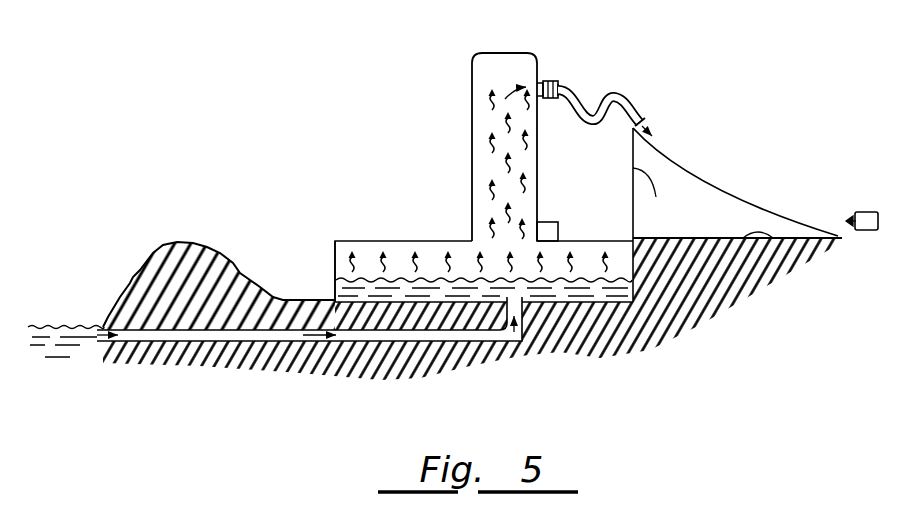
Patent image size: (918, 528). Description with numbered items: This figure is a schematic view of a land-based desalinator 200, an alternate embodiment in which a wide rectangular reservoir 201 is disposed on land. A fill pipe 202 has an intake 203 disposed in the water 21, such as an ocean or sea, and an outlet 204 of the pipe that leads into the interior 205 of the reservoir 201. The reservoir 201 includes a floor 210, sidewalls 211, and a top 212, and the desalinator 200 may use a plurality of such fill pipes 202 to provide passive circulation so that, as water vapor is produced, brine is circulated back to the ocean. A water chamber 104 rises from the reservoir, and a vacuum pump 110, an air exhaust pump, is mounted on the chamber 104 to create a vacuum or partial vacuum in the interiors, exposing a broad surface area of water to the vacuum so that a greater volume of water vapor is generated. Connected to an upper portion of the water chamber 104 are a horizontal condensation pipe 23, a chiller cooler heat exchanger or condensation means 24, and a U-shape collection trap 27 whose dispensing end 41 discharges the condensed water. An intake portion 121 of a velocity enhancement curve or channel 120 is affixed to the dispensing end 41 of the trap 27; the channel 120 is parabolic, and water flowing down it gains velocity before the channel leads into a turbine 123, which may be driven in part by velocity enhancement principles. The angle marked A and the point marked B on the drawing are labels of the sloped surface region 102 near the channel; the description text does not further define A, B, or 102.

The water 21 is at (80, 325).
The horizontal condensation pipe 23 is at (540, 80).
The condensation means 24 is at (560, 80).
The U-shape collection trap 27 is at (598, 125).
The dispensing end 41 is at (623, 97).
The sloped surface 102 is at (713, 172).
The water chamber 104 is at (482, 55).
The vacuum pump 110 is at (548, 222).
The velocity enhancement channel 120 is at (833, 236).
The intake portion 121 is at (650, 128).
The turbine 123 is at (868, 212).
The land-based desalinator 200 is at (491, 192).
The reservoir 201 is at (433, 241).
The fill pipe 202 is at (177, 355).
The intake 203 is at (103, 337).
The outlet 204 is at (522, 296).
The interior 205 is at (367, 252).
The floor 210 is at (523, 297).
The sidewalls 211 is at (335, 262).
The top 212 is at (621, 239).
The angle A is at (649, 193).
The point B is at (773, 240).